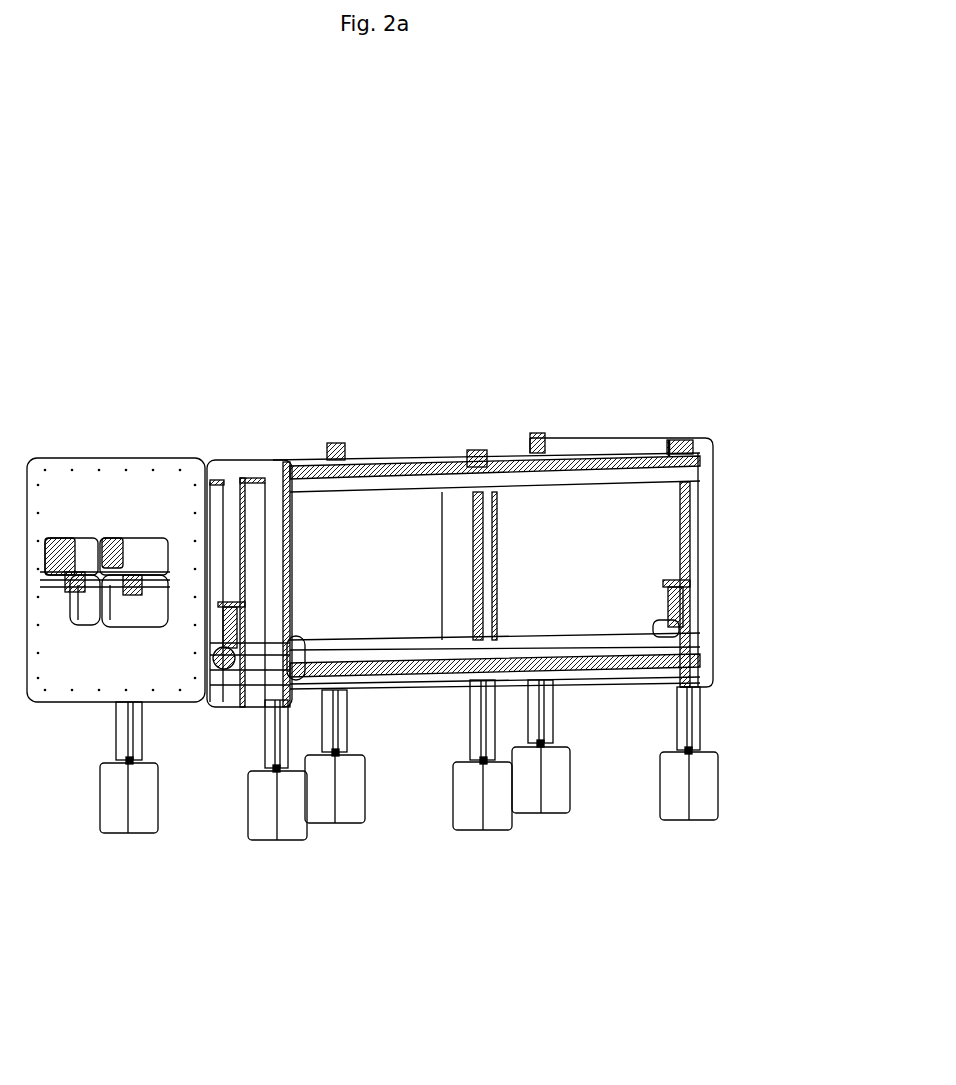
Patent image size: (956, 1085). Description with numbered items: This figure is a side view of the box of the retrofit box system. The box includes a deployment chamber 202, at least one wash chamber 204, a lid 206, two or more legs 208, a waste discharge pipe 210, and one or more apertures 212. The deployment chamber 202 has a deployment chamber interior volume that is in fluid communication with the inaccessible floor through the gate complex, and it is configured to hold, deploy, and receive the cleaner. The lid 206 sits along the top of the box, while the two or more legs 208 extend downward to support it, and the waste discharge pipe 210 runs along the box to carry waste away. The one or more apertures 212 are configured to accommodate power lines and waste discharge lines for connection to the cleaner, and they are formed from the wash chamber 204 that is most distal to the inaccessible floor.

The deployment chamber 202 is at (597, 533).
The wash chamber 204 is at (208, 690).
The lid 206 is at (296, 458).
The legs 208 is at (695, 718).
The waste discharge pipe 210 is at (675, 637).
The apertures 212 is at (64, 555).